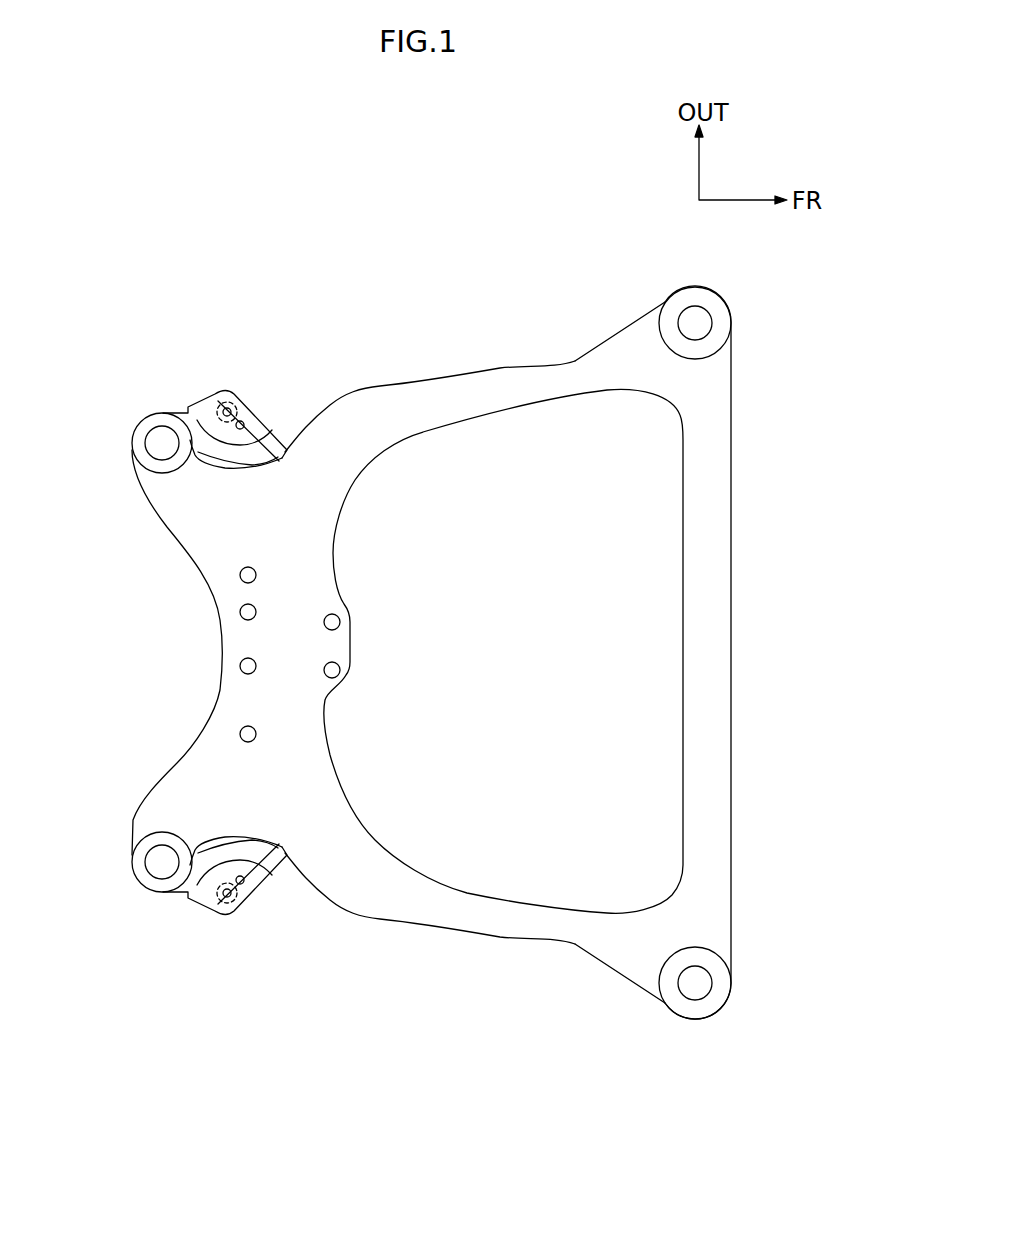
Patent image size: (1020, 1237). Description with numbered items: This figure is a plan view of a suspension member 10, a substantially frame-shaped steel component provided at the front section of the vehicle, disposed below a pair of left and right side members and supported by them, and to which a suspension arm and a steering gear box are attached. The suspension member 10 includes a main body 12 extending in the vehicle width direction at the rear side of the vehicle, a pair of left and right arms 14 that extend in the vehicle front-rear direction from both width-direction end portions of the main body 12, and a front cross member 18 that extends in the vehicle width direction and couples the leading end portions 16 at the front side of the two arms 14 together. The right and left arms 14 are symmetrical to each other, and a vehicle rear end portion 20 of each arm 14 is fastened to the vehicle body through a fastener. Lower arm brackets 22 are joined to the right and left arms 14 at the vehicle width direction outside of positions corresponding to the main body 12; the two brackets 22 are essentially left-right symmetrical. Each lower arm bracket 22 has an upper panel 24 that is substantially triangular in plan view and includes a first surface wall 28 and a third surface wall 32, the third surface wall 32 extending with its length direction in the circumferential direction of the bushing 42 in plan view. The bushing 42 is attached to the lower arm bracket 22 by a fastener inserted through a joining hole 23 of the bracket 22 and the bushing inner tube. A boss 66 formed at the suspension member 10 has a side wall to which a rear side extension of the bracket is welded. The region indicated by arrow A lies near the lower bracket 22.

The suspension member 10 is at (487, 349).
The main body 12 is at (310, 557).
The arm 14 is at (425, 417).
The leading end portion 16 is at (625, 378).
The front cross member 18 is at (712, 552).
The vehicle rear end portion 20 is at (143, 482).
The lower arm bracket 22 is at (257, 386).
The joining hole 23 is at (222, 404).
The upper panel 24 is at (260, 443).
The first surface wall 28 is at (240, 452).
The third surface wall 32 is at (229, 406).
The bushing 42 is at (213, 410).
The boss 66 is at (137, 435).
The region A is at (173, 912).